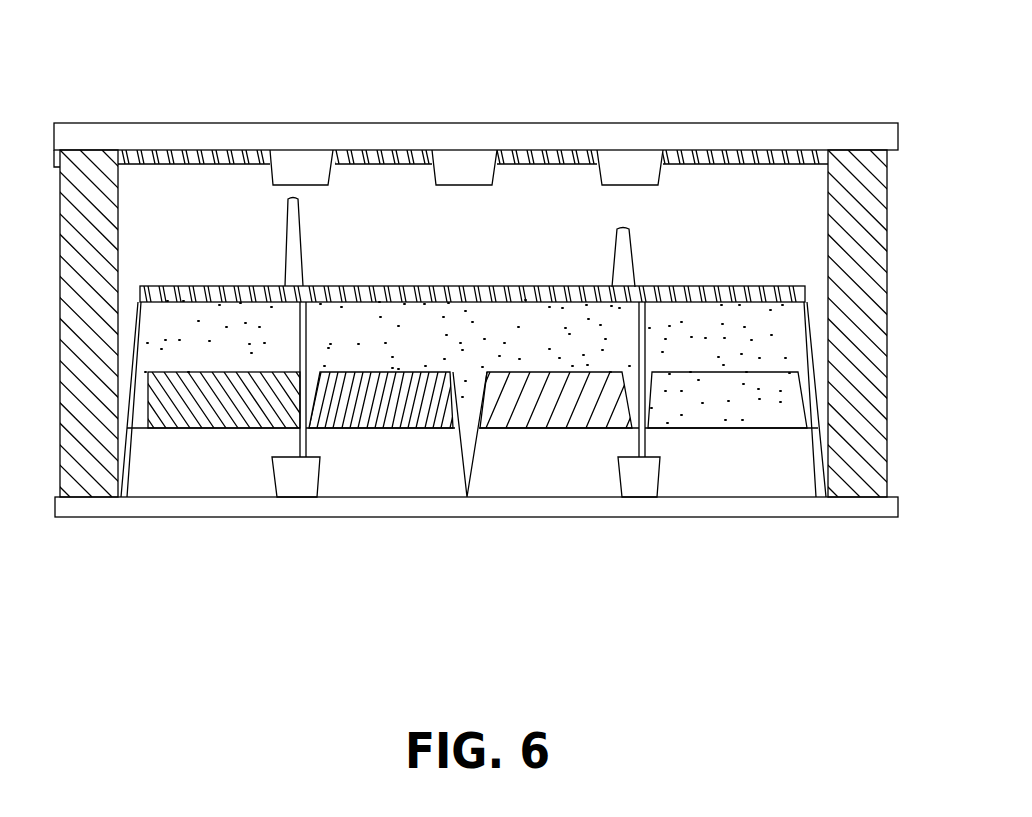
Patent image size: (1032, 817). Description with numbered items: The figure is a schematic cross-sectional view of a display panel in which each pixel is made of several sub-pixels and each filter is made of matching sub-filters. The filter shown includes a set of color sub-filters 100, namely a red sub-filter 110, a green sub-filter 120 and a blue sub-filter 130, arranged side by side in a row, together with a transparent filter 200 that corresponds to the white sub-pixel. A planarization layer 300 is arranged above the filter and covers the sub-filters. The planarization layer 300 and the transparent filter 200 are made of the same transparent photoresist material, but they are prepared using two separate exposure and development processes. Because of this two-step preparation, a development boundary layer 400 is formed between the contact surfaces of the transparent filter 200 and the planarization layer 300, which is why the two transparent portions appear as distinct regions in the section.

The color sub-filters 100 is at (383, 535).
The red sub-filter 110 is at (197, 412).
The green sub-filter 120 is at (403, 410).
The blue sub-filter 130 is at (554, 488).
The transparent filter 200 is at (727, 412).
The planarization layer 300 is at (475, 332).
The development boundary layer 400 is at (806, 378).